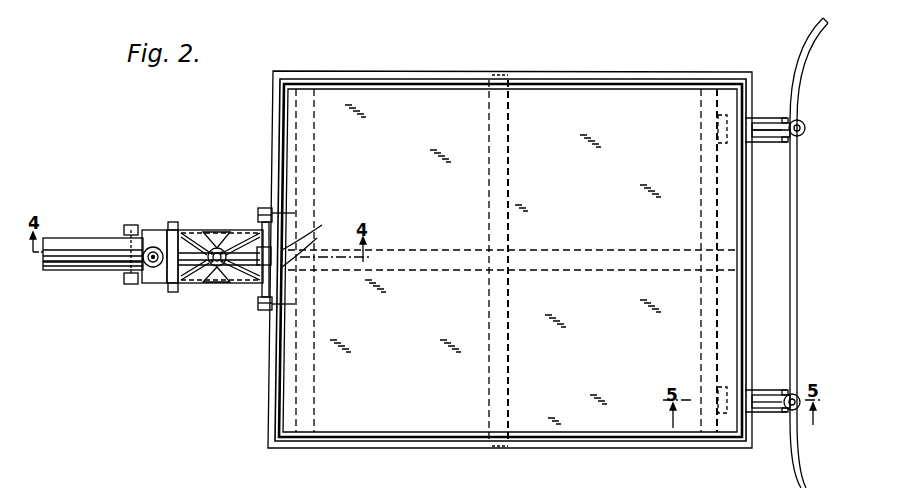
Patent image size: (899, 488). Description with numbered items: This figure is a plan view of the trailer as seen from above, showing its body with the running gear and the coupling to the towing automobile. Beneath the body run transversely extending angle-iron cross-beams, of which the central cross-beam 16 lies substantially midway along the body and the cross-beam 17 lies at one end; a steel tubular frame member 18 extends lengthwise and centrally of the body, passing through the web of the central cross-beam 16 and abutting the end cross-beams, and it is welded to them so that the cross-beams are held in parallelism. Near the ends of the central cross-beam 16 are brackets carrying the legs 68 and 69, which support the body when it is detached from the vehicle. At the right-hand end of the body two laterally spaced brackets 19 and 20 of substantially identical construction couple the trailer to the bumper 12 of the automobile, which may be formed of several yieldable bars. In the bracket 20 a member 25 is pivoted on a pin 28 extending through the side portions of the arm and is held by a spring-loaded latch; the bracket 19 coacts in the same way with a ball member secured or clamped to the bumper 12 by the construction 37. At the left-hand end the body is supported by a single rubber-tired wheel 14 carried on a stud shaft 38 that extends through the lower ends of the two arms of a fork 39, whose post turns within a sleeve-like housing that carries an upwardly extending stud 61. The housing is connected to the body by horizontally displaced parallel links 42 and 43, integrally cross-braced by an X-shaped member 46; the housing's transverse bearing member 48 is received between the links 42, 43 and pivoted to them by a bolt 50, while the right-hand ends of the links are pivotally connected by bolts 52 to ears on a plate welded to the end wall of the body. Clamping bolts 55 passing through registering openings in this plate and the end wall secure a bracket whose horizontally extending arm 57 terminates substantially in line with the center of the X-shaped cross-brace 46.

The bumper 12 is at (790, 242).
The wheel 14 is at (69, 241).
The cross-beam 16 is at (508, 358).
The cross-beam 17 is at (697, 354).
The tubular frame member 18 is at (560, 272).
The bracket 19 is at (768, 118).
The bracket 20 is at (762, 392).
The member 25 is at (773, 142).
The pin 28 is at (777, 414).
The ball member construction 37 is at (805, 124).
The stud shaft 38 is at (130, 226).
The fork 39 is at (144, 230).
The link 42 is at (192, 231).
The link 43 is at (195, 284).
The X-shaped member 46 is at (216, 268).
The bearing member 48 is at (170, 269).
The bolt 50 is at (172, 222).
The bolt 52 is at (263, 208).
The clamping bolt 55 is at (308, 246).
The arm 57 is at (245, 232).
The stud 61 is at (113, 270).
The leg 68 is at (487, 450).
The leg 69 is at (508, 74).